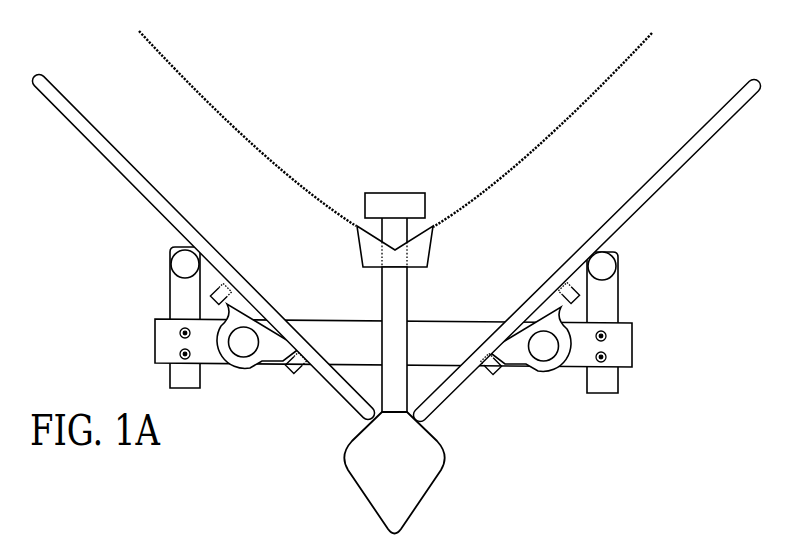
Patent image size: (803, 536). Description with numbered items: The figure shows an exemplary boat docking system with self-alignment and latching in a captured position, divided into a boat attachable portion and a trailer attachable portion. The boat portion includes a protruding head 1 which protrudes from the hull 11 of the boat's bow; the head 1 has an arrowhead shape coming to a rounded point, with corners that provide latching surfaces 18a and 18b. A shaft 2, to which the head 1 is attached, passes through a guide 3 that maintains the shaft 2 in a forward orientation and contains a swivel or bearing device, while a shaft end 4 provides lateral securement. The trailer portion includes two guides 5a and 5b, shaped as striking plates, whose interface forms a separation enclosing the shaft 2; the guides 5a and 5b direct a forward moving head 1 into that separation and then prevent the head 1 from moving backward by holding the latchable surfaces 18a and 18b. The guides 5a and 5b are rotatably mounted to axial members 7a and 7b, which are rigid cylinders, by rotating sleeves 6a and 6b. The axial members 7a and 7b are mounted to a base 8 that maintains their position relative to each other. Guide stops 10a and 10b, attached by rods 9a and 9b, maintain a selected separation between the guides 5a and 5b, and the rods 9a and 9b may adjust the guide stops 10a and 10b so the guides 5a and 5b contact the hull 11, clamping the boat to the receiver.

The protruding head 1 is at (424, 497).
The shaft 2 is at (408, 300).
The guide 3 is at (433, 247).
The shaft end 4 is at (388, 193).
The guide 5a is at (158, 191).
The guide 5b is at (646, 188).
The rotating sleeve 6a is at (235, 369).
The rotating sleeve 6b is at (546, 372).
The axial member 7a is at (245, 346).
The axial member 7b is at (547, 351).
The base 8 is at (633, 342).
The rod 9a is at (178, 298).
The rod 9b is at (614, 298).
The guide stop 10a is at (178, 262).
The guide stop 10b is at (616, 262).
The hull 11 is at (261, 148).
The latching surface 18a is at (347, 420).
The latching surface 18b is at (441, 420).